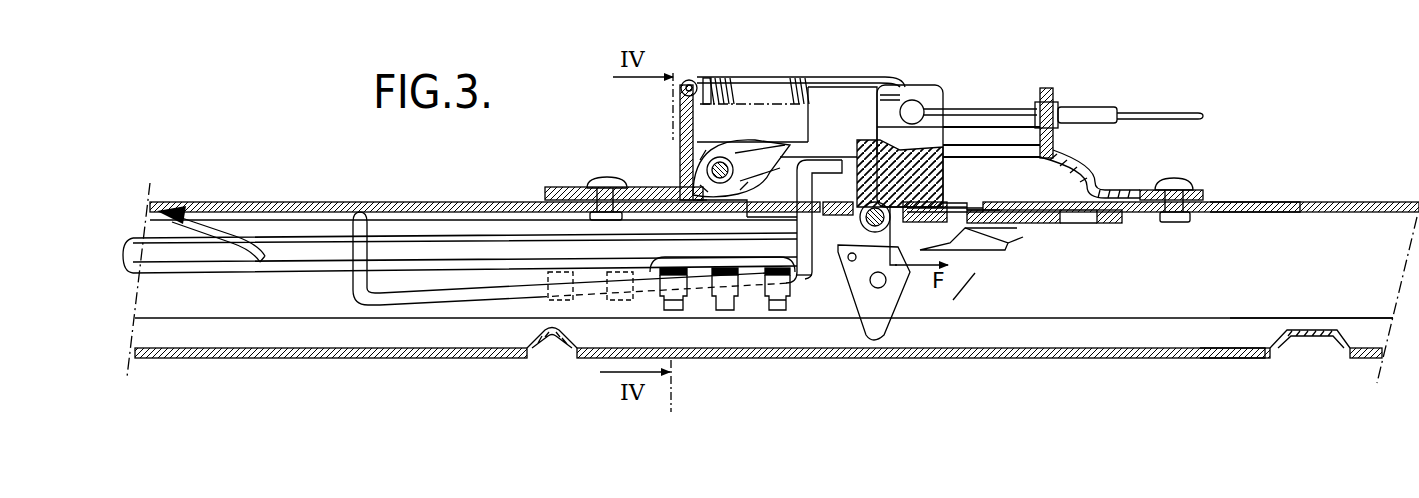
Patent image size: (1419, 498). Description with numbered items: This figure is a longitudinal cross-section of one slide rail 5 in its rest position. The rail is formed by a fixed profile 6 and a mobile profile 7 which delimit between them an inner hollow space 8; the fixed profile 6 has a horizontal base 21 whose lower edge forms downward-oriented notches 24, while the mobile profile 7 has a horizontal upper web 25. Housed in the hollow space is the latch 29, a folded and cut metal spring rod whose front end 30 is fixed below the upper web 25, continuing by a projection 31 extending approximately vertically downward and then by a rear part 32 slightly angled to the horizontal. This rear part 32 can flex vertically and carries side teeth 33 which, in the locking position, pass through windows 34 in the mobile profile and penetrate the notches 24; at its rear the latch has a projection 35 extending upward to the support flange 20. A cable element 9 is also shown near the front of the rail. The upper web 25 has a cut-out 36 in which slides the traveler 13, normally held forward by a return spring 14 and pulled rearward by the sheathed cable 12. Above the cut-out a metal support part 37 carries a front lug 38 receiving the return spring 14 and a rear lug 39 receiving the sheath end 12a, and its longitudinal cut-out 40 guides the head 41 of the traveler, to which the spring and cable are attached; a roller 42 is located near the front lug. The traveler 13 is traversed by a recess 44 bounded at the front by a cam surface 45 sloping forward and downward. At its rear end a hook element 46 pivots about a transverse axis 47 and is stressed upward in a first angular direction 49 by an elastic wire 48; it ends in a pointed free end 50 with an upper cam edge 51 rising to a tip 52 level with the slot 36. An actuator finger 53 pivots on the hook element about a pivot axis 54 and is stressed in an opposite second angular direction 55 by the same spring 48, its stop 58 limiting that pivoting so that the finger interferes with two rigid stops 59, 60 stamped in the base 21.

The slide rail 5 is at (777, 264).
The fixed profile 6 is at (758, 373).
The mobile profile 7 is at (784, 181).
The inner hollow space 8 is at (1327, 287).
The release cable 9 is at (197, 253).
The sheathed cable 12 is at (1063, 85).
The end of the sheath 12a is at (1055, 113).
The traveler 13 is at (1030, 122).
The return spring 14 is at (799, 209).
The support flange 20 is at (830, 167).
The horizontal base 21 is at (1247, 355).
The notches 24 is at (673, 270).
The upper web 25 is at (1287, 203).
The latch 29 is at (354, 285).
The front end 30 is at (460, 212).
The projection 31 is at (360, 260).
The rear part 32 is at (592, 280).
The side teeth 33 is at (777, 288).
The windows 34 is at (670, 303).
The projection 35 is at (808, 283).
The cut-out 36 is at (717, 270).
The support part 37 is at (1087, 160).
The front lug 38 is at (683, 133).
The rear lug 39 is at (1047, 88).
The longitudinal cut-out 40 is at (1025, 148).
The head 41 is at (972, 121).
The roller 42 is at (728, 163).
The recess 44 is at (790, 170).
The cam surface 45 is at (770, 170).
The hook element 46 is at (1031, 198).
The transverse horizontal axis 47 is at (860, 220).
The elastic metal wire 48 is at (943, 208).
The first angular direction 49 is at (1023, 236).
The pointed free end 50 is at (1010, 260).
The upper cam edge 51 is at (1017, 228).
The tip 52 is at (977, 217).
The actuator finger 53 is at (874, 320).
The pivot axis 54 is at (877, 289).
The second angular direction 55 is at (975, 273).
The stop 58 is at (848, 261).
The rigid stop 59 is at (547, 335).
The rigid stop 60 is at (1318, 340).